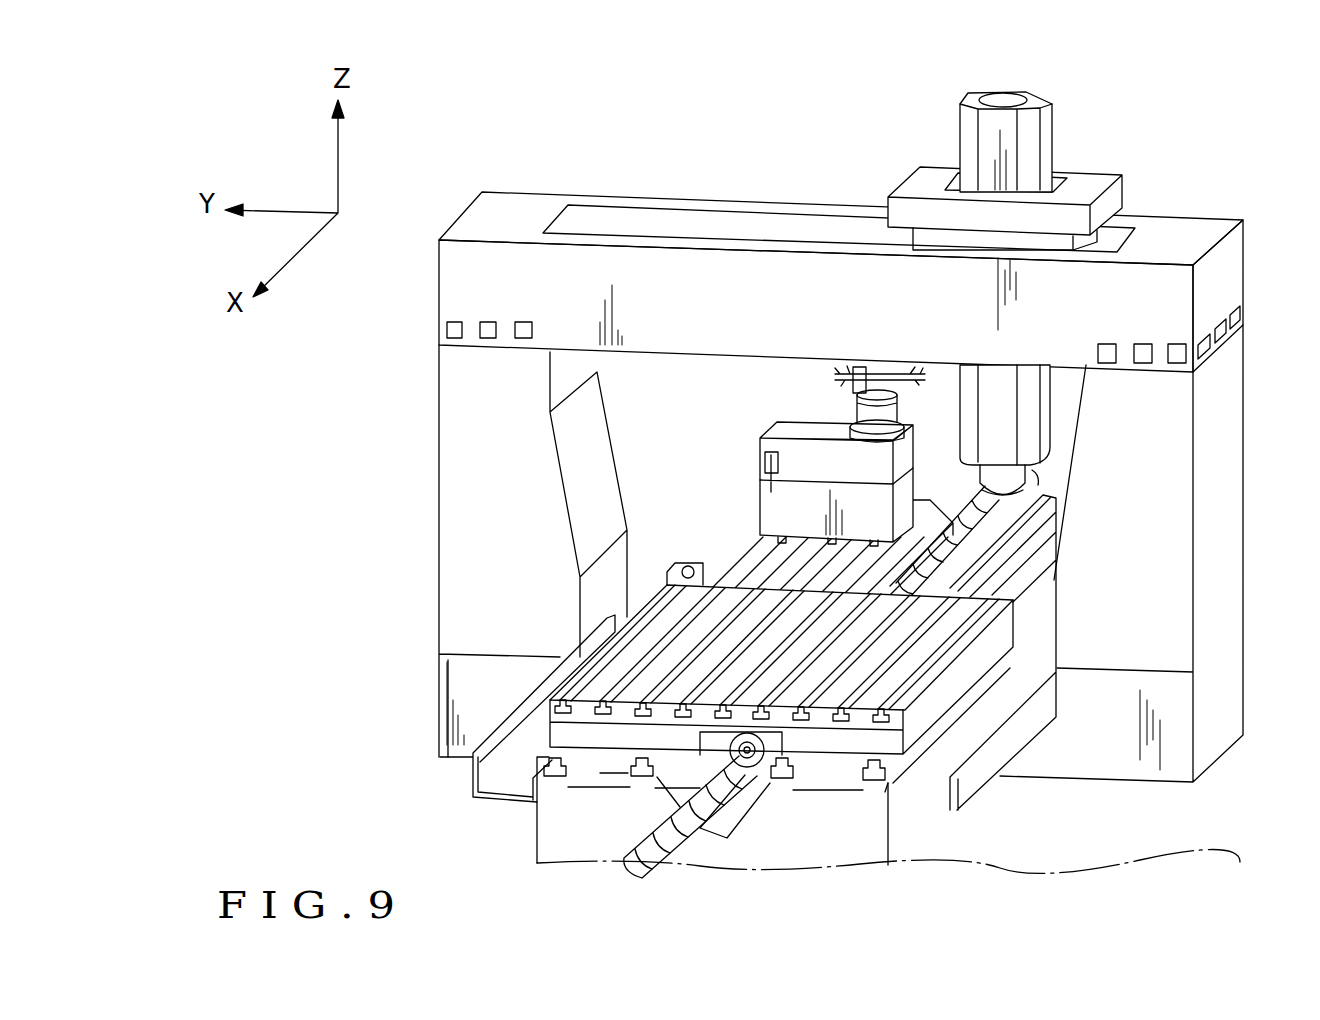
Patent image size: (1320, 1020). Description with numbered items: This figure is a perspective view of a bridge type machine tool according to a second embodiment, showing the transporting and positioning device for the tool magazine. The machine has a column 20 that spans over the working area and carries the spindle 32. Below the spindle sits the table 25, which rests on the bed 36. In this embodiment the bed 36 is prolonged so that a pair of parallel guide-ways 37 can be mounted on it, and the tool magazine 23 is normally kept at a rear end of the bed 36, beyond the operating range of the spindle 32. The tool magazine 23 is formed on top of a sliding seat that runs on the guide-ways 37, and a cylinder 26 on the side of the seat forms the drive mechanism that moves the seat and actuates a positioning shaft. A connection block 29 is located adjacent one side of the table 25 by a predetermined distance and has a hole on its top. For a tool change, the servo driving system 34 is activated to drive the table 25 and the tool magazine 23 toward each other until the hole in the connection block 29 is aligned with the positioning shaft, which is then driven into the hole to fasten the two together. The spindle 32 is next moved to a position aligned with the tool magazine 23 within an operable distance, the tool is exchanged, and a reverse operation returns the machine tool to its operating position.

The column 20 is at (465, 515).
The tool magazine 23 is at (828, 387).
The table 25 is at (910, 660).
The cylinder 26 is at (762, 468).
The connection block 29 is at (677, 580).
The spindle 32 is at (1028, 148).
The servo driving system 34 is at (710, 795).
The bed 36 is at (552, 828).
The guide-ways 37 is at (753, 557).